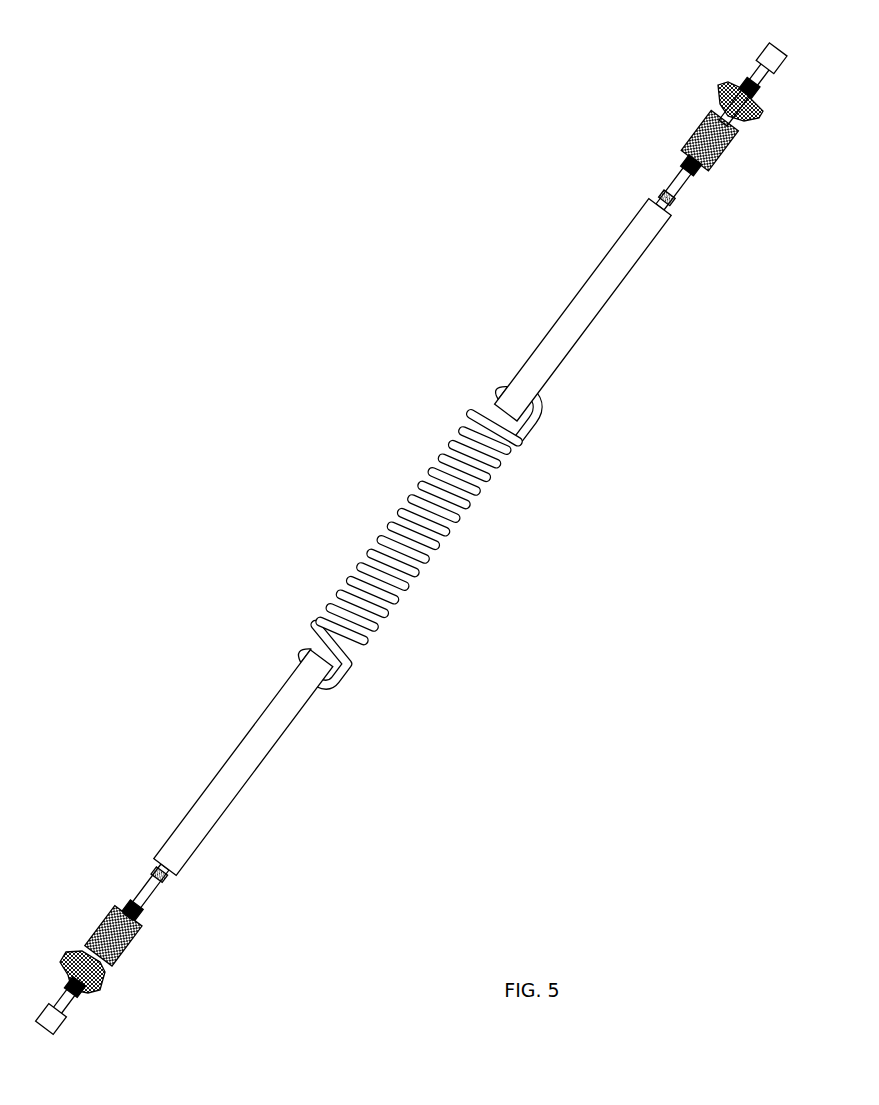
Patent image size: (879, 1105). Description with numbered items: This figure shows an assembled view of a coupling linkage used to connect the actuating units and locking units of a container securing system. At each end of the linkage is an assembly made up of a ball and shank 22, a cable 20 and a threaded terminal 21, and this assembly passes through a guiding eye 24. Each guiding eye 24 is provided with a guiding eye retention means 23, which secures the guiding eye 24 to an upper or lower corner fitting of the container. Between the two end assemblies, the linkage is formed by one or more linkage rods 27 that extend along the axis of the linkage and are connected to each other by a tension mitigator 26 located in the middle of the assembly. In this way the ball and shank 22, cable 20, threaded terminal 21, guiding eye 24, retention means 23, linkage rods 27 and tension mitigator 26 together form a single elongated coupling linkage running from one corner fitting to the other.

The cable 20 is at (743, 85).
The threaded terminal 21 is at (672, 195).
The ball and shank 22 is at (762, 63).
The guiding eye retention means 23 is at (693, 138).
The guiding eye 24 is at (725, 102).
The tension mitigator 26 is at (433, 525).
The linkage rod 27 is at (582, 310).